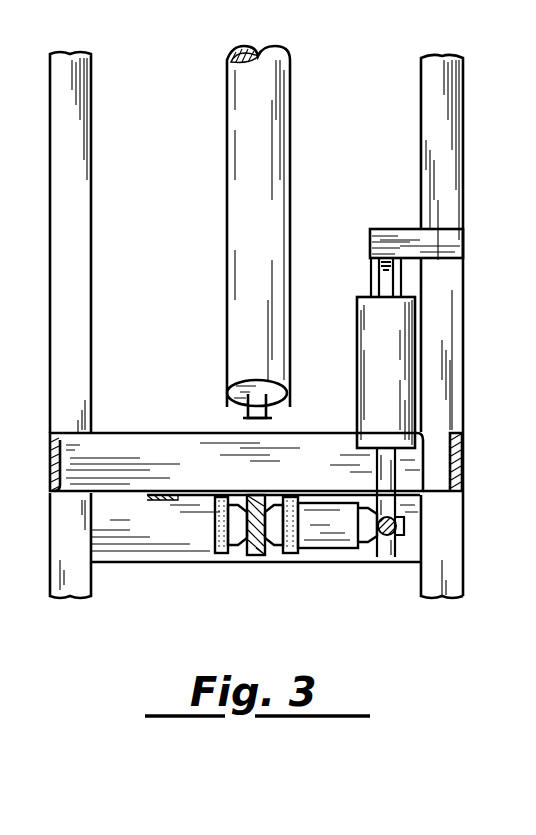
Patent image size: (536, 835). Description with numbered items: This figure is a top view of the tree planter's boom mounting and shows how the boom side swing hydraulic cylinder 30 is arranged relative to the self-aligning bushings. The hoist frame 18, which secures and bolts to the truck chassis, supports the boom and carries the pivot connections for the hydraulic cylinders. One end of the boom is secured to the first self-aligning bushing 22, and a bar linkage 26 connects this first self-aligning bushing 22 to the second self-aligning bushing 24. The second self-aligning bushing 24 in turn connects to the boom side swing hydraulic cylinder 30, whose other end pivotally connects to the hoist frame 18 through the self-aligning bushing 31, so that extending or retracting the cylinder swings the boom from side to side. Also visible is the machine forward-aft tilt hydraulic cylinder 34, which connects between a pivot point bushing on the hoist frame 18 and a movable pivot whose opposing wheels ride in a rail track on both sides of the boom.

The hoist frame 18 is at (465, 107).
The first self-aligning bushing 22 is at (273, 545).
The second self-aligning bushing 24 is at (390, 540).
The bar linkage 26 is at (323, 549).
The boom side swing hydraulic cylinder 30 is at (357, 343).
The self-aligning bushing 31 is at (370, 246).
The machine forward-aft tilt hydraulic cylinder 34 is at (227, 104).